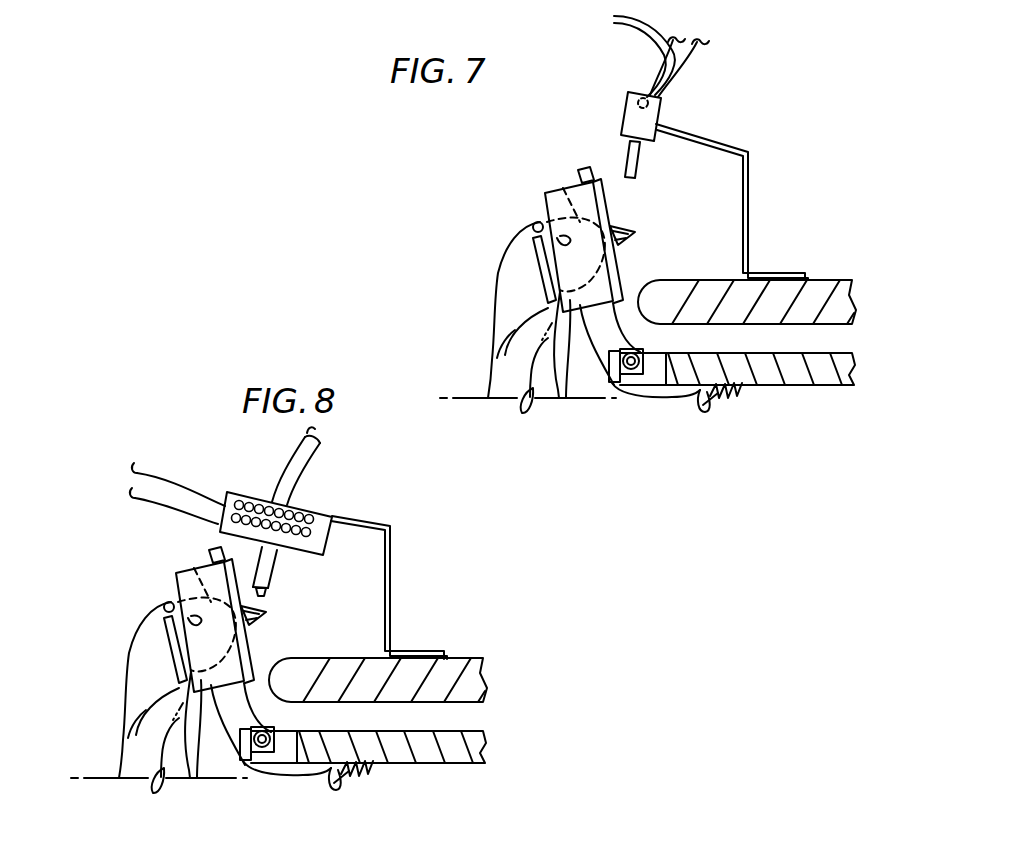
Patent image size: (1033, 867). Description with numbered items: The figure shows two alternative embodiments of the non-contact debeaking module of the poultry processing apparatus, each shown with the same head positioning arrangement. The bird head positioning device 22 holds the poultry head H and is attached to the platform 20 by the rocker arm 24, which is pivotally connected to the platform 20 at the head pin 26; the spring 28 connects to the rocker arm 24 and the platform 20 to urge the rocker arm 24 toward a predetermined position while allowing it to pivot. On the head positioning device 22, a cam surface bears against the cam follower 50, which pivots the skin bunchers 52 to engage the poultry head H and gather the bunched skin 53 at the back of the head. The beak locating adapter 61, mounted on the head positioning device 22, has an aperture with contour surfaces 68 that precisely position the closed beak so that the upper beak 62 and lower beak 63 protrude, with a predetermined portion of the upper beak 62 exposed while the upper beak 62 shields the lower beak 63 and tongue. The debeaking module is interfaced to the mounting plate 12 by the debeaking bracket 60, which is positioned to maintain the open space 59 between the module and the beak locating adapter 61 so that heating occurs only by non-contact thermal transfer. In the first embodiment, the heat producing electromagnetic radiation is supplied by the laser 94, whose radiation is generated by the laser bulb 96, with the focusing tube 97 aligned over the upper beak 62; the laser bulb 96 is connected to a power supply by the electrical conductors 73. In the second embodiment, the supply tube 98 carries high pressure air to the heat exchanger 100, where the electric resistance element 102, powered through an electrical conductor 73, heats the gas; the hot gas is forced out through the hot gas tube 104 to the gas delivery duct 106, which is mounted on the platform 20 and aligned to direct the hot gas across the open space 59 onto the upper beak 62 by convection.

In FIG. 7, the mounting plate 12 is at (833, 292).
In FIG. 8, the mounting plate 12 is at (378, 680).
In FIG. 7, the platform 20 is at (798, 378).
In FIG. 8, the platform 20 is at (369, 771).
In FIG. 7, the bird head positioning device 22 is at (543, 194).
In FIG. 8, the bird head positioning device 22 is at (128, 596).
In FIG. 7, the rocker arm 24 is at (660, 390).
In FIG. 8, the rocker arm 24 is at (288, 790).
In FIG. 7, the head pin 26 is at (614, 385).
In FIG. 8, the head pin 26 is at (228, 776).
In FIG. 7, the spring 28 is at (730, 397).
In FIG. 8, the spring 28 is at (374, 797).
In FIG. 7, the cam follower 50 is at (577, 182).
In FIG. 8, the cam follower 50 is at (183, 619).
In FIG. 7, the skin bunchers 52 is at (538, 268).
In FIG. 8, the skin bunchers 52 is at (124, 649).
In FIG. 7, the bunched skin 53 is at (527, 243).
In FIG. 8, the bunched skin 53 is at (109, 621).
In FIG. 7, the open space 59 is at (620, 185).
In FIG. 8, the open space 59 is at (357, 606).
In FIG. 7, the debeaking bracket 60 is at (735, 150).
In FIG. 8, the debeaking bracket 60 is at (404, 581).
In FIG. 7, the beak locating adapter 61 is at (623, 277).
In FIG. 8, the beak locating adapter 61 is at (172, 724).
In FIG. 7, the upper beak 62 is at (634, 230).
In FIG. 8, the lower beak 63 is at (293, 633).
In FIG. 7, the contour surfaces 68 is at (556, 184).
In FIG. 8, the contour surfaces 68 is at (163, 620).
In FIG. 7, the electrical conductors 73 is at (644, 50).
In FIG. 7, the laser 94 is at (665, 113).
In FIG. 7, the laser bulb 96 is at (623, 93).
In FIG. 7, the focusing tube 97 is at (625, 148).
In FIG. 8, the supply tube 98 is at (333, 466).
In FIG. 8, the heat exchanger 100 is at (290, 492).
In FIG. 8, the electric resistance element 102 is at (301, 541).
In FIG. 8, the hot gas tube 104 is at (207, 552).
In FIG. 8, the gas delivery duct 106 is at (311, 598).
In FIG. 7, the poultry head H is at (505, 258).
In FIG. 8, the poultry head H is at (122, 697).